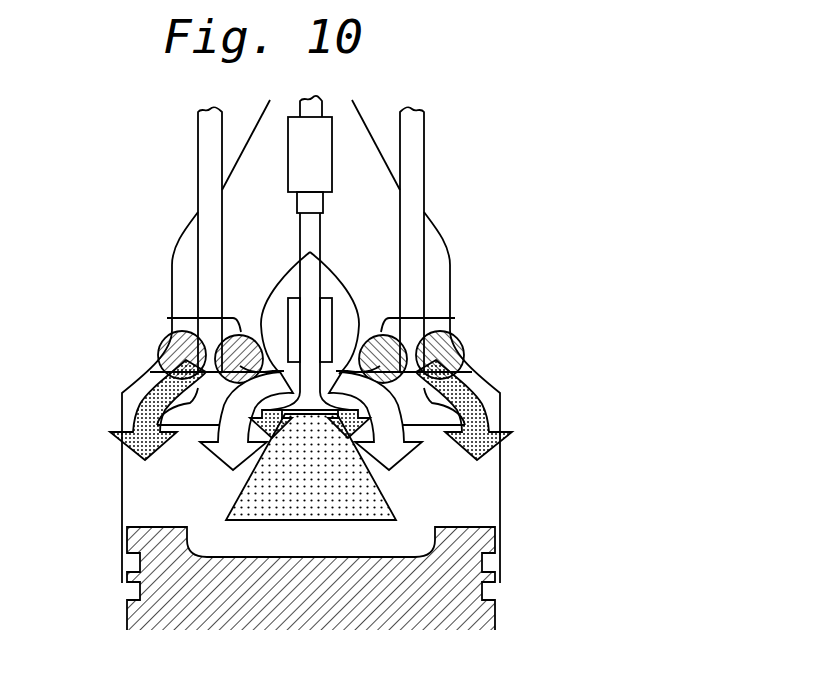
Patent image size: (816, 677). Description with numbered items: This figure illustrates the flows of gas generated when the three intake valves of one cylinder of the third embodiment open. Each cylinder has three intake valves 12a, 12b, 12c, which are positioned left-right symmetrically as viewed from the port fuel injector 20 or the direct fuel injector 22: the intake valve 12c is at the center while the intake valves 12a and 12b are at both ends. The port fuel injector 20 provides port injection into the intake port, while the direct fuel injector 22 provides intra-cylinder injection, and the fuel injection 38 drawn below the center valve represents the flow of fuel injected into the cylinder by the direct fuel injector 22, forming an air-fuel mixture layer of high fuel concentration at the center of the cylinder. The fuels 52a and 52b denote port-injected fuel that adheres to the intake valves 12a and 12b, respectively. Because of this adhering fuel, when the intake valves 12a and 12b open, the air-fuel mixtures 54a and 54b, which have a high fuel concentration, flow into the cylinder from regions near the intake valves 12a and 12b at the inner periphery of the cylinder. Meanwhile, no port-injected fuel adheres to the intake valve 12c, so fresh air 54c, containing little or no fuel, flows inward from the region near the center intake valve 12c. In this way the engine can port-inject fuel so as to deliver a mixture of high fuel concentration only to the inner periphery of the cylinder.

The intake valve 12a is at (207, 160).
The intake valve 12b is at (410, 165).
The intake valve 12c is at (300, 237).
The port fuel injector 20 is at (333, 164).
The direct fuel injector 22 is at (328, 290).
The fuel injection 38 is at (380, 507).
The fuel adhering to intake valve 52a is at (167, 318).
The fuel adhering to intake valve 52b is at (455, 318).
The air-fuel mixture 54a is at (122, 452).
The air-fuel mixture 54b is at (505, 444).
The fresh air 54c is at (220, 447).